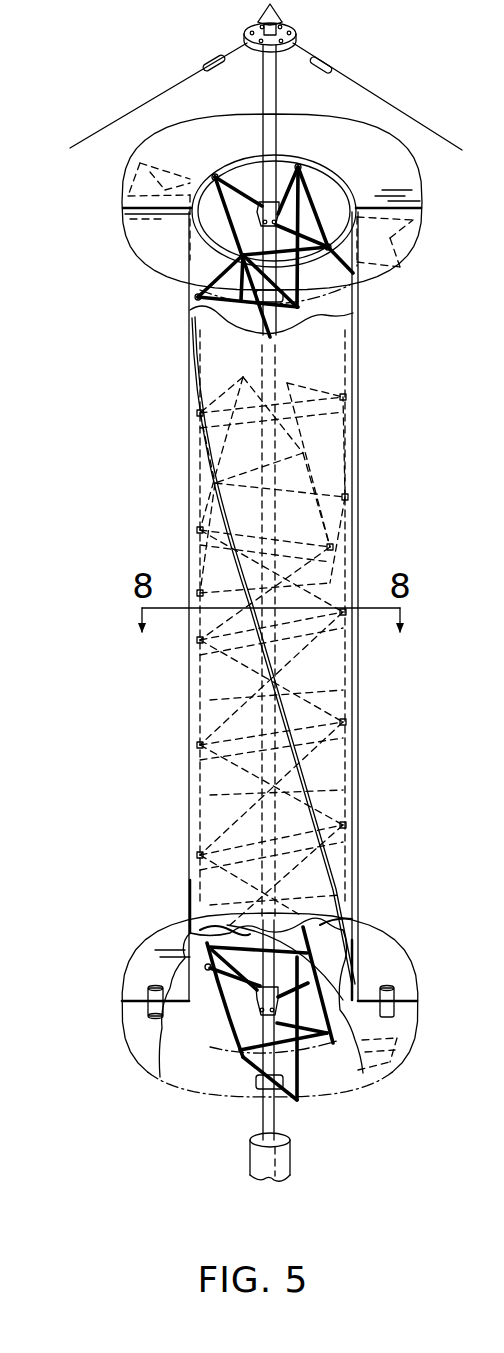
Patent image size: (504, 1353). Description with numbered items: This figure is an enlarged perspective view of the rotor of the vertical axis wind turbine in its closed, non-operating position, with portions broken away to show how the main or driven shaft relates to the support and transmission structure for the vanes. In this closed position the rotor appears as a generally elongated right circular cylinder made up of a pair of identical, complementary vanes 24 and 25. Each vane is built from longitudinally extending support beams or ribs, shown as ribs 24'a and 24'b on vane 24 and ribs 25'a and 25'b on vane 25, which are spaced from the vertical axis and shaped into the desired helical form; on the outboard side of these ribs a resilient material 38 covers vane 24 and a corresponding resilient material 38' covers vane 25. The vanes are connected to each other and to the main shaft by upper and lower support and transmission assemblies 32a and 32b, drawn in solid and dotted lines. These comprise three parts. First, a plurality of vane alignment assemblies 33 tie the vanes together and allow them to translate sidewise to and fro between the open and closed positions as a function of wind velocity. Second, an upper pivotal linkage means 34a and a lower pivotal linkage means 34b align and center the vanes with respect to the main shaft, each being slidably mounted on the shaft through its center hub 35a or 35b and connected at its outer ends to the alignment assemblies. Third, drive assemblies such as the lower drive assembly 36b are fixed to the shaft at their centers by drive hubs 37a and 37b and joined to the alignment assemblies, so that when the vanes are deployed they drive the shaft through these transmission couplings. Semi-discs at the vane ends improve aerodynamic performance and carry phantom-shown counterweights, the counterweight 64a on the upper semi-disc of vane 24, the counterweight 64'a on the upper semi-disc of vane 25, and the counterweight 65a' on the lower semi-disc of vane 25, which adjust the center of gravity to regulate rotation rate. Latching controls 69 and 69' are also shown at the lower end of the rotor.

The vane 24 is at (301, 644).
The vane 25 is at (232, 606).
The support beam or rib 24'a is at (360, 975).
The support beam or rib 24'b is at (147, 890).
The support beam or rib 25'a is at (177, 910).
The support beam or rib 25'b is at (380, 917).
The support and transmission assembly 32a is at (310, 188).
The support and transmission assembly 32b is at (199, 983).
The vane alignment assembly 33 is at (350, 398).
The upper pivotal linkage means 34a is at (282, 215).
The lower pivotal linkage means 34b is at (284, 1066).
The center hub 35a is at (258, 200).
The center hub 35b is at (256, 1007).
The drive assembly 36b is at (309, 284).
The drive hub 37a is at (289, 318).
The drive hub 37b is at (265, 1093).
The resilient material 38 is at (240, 651).
The resilient material 38' is at (386, 606).
The counterweight 64a is at (410, 226).
The counterweight 64'a is at (134, 204).
The counterweight 65a' is at (294, 1005).
The latching control 69 is at (121, 1002).
The latching control 69' is at (422, 1012).